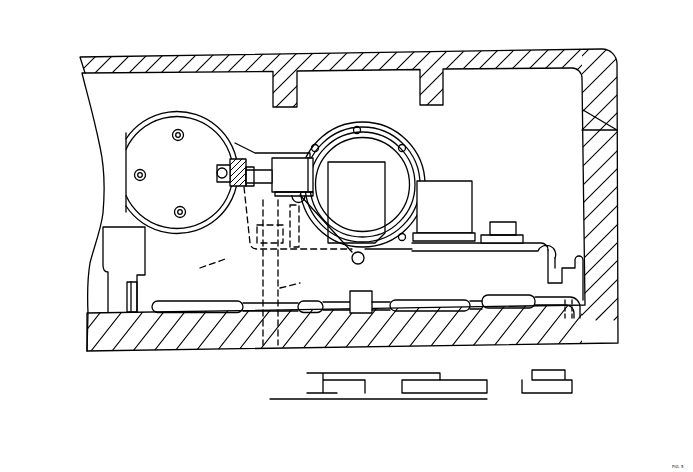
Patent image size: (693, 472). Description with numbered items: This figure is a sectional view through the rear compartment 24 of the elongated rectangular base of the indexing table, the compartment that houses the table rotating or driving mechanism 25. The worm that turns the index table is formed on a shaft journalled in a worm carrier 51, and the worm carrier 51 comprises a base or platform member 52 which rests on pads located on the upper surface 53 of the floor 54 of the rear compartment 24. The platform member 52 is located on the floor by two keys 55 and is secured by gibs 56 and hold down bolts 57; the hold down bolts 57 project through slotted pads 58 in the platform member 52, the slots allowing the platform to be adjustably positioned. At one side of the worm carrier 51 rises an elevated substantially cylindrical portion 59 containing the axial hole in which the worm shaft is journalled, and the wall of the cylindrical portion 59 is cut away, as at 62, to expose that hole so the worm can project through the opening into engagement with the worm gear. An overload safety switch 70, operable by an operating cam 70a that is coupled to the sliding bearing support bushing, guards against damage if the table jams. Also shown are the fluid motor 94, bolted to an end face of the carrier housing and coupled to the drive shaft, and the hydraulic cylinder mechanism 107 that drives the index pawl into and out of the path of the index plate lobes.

The rear compartment 24 is at (572, 157).
The table rotating or driving mechanism 25 is at (430, 150).
The worm carrier 51 is at (142, 244).
The platform member 52 is at (535, 260).
The upper surface 53 is at (178, 303).
The floor 54 is at (160, 342).
The keys 55 is at (370, 292).
The gibs 56 is at (118, 290).
The hold down bolts 57 is at (282, 266).
The slotted pads 58 is at (512, 238).
The cylindrical portion 59 is at (502, 219).
The cut away 62 is at (126, 150).
The overload safety switch 70 is at (308, 197).
The operating cam 70a is at (251, 163).
The fluid motor 94 is at (357, 165).
The hydraulic cylinder mechanism 107 is at (457, 188).